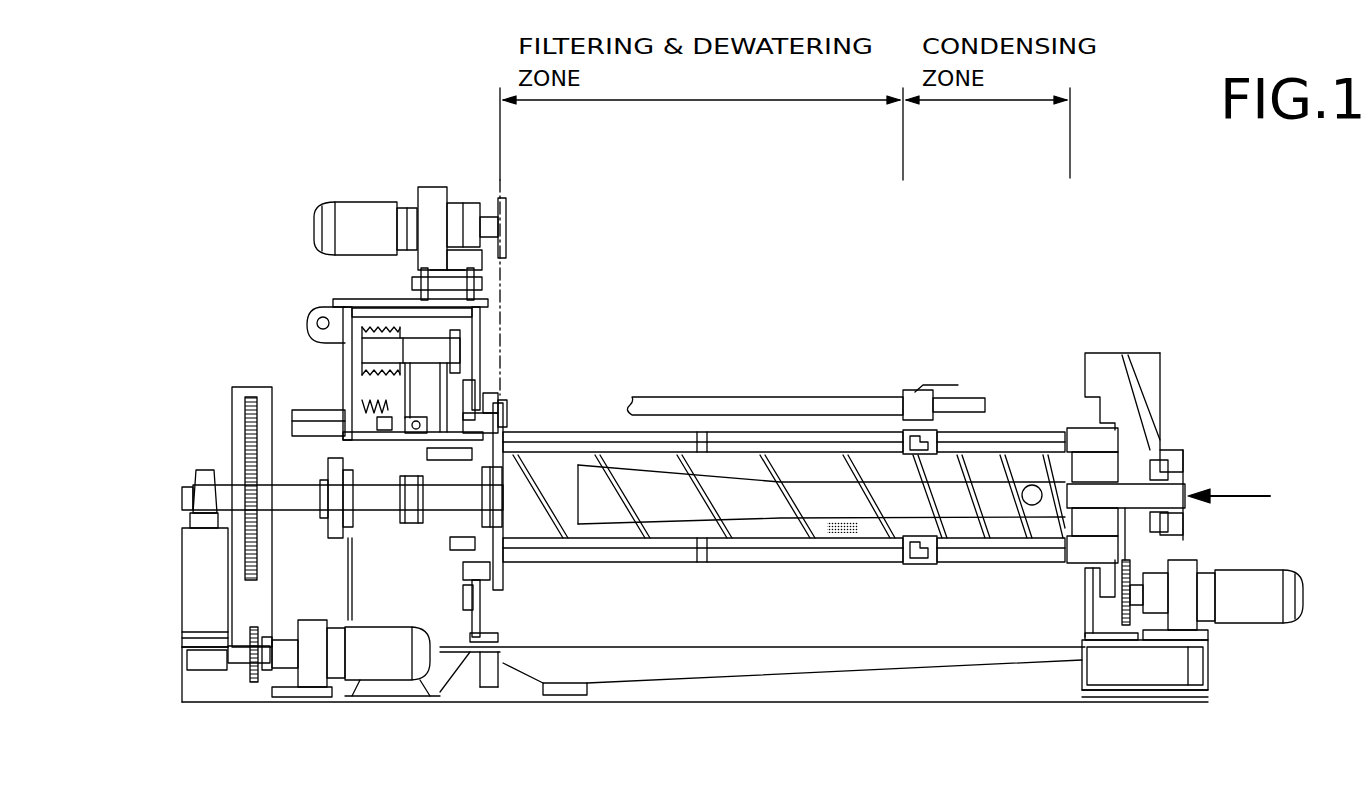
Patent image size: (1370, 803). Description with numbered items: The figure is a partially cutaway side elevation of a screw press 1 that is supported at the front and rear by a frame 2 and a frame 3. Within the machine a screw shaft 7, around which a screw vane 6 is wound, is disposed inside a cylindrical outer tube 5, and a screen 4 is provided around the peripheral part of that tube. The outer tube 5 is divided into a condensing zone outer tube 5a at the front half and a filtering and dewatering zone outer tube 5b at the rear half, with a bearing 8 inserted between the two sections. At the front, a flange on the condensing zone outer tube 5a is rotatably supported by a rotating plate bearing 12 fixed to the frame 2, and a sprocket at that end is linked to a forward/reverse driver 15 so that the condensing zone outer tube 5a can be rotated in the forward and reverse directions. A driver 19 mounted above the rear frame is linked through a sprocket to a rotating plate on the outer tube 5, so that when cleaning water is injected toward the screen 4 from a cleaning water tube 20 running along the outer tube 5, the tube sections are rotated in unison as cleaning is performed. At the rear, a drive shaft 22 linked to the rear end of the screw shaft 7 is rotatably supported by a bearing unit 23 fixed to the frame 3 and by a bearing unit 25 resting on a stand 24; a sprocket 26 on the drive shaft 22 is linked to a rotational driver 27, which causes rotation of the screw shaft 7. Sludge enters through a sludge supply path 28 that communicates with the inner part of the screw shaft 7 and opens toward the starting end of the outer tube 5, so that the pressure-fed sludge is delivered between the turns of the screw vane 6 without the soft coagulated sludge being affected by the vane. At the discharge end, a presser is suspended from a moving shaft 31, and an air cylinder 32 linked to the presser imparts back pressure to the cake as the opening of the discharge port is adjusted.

The screw press 1 is at (730, 330).
The frame 2 is at (1152, 352).
The frame 3 is at (475, 340).
The screen 4 is at (842, 535).
The outer tube 5 is at (836, 432).
The condensing zone outer tube 5a is at (1028, 432).
The filtering and dewatering zone outer tube 5b is at (594, 432).
The screw vane 6 is at (925, 552).
The screw shaft 7 is at (603, 540).
The bearing 8 is at (935, 390).
The rotating plate bearing 12 is at (1125, 405).
The forward/reverse driver 15 is at (510, 415).
The driver 19 is at (362, 218).
The cleaning water tube 20 is at (772, 397).
The drive shaft 22 is at (313, 410).
The bearing unit 23 is at (352, 525).
The stand 24 is at (200, 612).
The bearing unit 25 is at (205, 490).
The sprocket 26 is at (247, 560).
The rotational driver 27 is at (285, 682).
The sludge supply path 28 is at (1032, 506).
The moving shaft 31 is at (378, 327).
The air cylinder 32 is at (370, 403).